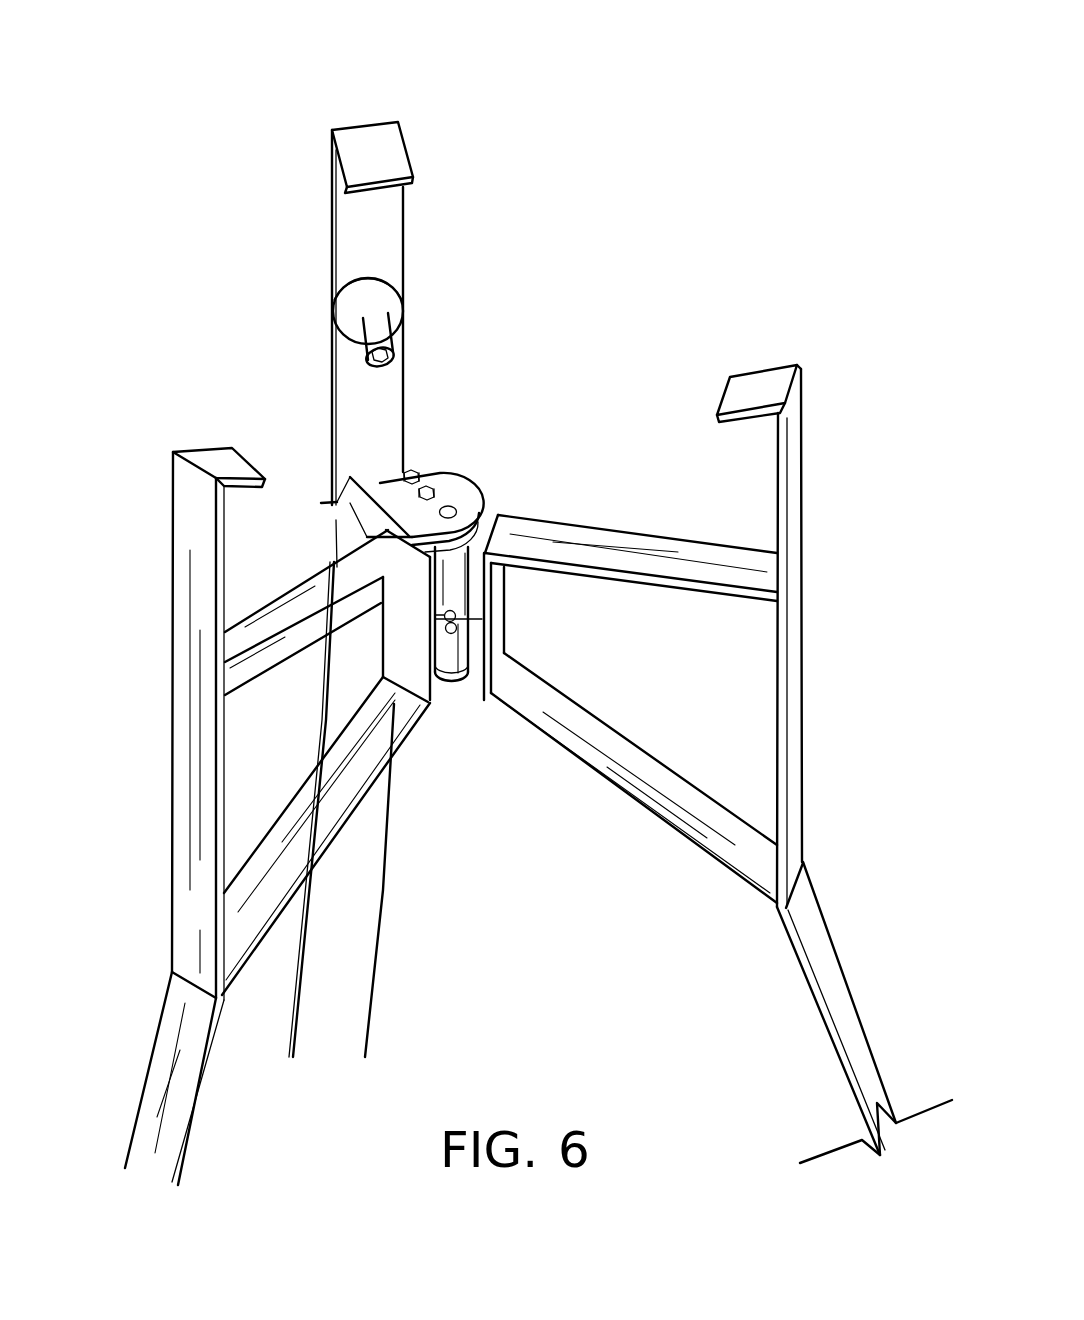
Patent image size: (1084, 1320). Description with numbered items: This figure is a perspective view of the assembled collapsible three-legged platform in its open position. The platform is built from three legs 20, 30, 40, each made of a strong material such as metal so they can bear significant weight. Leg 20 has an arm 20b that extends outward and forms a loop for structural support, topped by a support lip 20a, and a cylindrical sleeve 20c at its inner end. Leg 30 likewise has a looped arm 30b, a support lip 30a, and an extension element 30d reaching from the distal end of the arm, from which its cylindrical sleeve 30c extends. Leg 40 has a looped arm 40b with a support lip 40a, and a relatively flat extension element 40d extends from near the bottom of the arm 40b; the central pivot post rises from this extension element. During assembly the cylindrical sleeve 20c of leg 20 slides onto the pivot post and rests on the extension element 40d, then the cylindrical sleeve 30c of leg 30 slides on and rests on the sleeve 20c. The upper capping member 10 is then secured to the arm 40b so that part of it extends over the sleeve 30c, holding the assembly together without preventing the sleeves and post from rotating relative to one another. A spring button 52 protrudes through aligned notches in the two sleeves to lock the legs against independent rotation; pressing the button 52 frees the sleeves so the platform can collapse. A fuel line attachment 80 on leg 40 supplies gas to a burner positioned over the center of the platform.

The upper capping member 10 is at (461, 497).
The leg 20 is at (256, 787).
The support lip 20a is at (222, 464).
The arm 20b is at (256, 664).
The cylindrical sleeve 20c is at (453, 655).
The leg 30 is at (702, 735).
The support lip 30a is at (760, 388).
The arm 30b is at (655, 760).
The cylindrical sleeve 30c is at (453, 565).
The extension element 30d is at (475, 580).
The leg 40 is at (384, 554).
The support lip 40a is at (375, 147).
The arm 40b is at (334, 518).
The extension element 40d is at (463, 685).
The spring button 52 is at (457, 630).
The fuel line attachment 80 is at (395, 308).